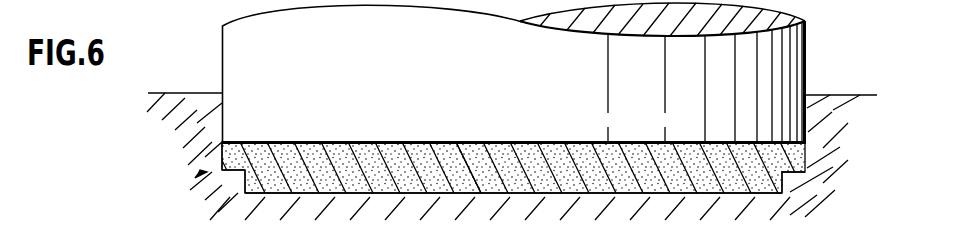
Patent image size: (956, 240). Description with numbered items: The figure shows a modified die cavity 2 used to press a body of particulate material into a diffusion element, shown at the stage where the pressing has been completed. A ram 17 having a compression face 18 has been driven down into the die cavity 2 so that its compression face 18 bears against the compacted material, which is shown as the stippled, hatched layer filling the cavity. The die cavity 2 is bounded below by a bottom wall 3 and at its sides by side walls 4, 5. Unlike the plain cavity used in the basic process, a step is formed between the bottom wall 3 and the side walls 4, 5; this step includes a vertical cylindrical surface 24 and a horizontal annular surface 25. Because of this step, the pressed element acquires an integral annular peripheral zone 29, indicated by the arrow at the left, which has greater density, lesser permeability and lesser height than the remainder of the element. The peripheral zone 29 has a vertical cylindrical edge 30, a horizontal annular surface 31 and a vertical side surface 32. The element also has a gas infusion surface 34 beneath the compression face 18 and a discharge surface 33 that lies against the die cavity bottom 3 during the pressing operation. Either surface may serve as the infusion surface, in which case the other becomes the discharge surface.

The die cavity 2 is at (455, 168).
The bottom wall 3 is at (568, 196).
The side wall 4 is at (807, 118).
The side wall 5 is at (192, 126).
The ram 17 is at (787, 77).
The compression face 18 is at (372, 147).
The vertical cylindrical surface 24 is at (783, 180).
The horizontal annular surface 25 is at (242, 173).
The annular peripheral zone 29 is at (203, 174).
The vertical cylindrical edge 30 is at (213, 157).
The horizontal annular surface 31 is at (252, 141).
The vertical side surface 32 is at (250, 178).
The discharge surface 33 is at (475, 182).
The gas infusion surface 34 is at (315, 141).